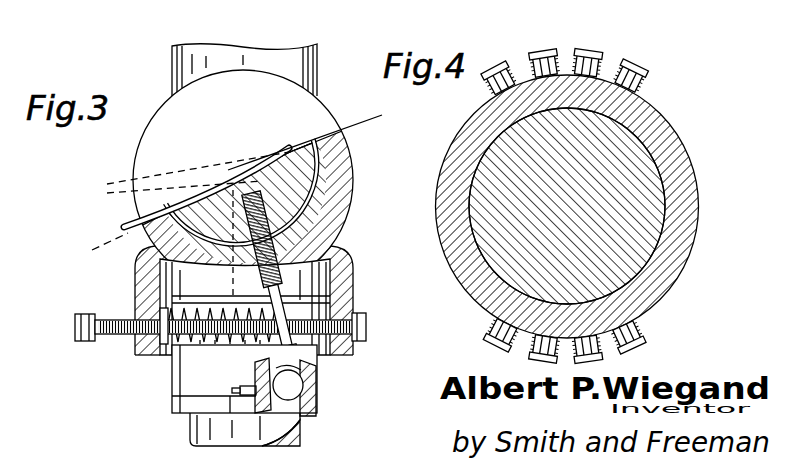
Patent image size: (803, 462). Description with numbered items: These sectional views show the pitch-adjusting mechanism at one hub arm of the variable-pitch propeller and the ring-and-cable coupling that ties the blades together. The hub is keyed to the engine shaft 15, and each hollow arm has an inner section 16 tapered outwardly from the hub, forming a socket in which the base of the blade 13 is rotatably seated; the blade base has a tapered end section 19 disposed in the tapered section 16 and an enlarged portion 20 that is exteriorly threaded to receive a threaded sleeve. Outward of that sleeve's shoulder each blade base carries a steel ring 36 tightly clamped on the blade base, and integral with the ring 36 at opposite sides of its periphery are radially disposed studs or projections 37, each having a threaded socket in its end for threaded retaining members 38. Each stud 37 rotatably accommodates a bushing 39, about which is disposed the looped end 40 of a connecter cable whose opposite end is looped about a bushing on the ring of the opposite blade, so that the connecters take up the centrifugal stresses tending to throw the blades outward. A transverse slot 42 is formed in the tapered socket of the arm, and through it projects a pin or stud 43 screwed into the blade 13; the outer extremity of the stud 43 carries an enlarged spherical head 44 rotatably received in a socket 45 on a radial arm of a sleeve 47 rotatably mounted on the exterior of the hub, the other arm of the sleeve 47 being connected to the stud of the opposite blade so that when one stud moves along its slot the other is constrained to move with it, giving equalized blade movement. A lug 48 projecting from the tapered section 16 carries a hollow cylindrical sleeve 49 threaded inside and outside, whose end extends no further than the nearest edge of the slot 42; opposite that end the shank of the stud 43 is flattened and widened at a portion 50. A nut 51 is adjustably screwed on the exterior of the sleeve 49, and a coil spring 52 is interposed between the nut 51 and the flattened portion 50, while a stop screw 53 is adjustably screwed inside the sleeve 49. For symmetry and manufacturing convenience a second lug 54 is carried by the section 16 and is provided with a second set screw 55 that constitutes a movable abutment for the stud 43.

In FIG. 3, the blade 13 is at (246, 160).
In FIG. 3, the engine shaft 15 is at (192, 430).
In FIG. 3, the inner section 16 is at (343, 181).
In FIG. 3, the tapered end section 19 is at (345, 162).
In FIG. 4, the enlarged portion 20 is at (650, 181).
In FIG. 4, the steel ring 36 is at (650, 118).
In FIG. 4, the studs or projections 37 is at (643, 80).
In FIG. 4, the threaded retaining members 38 is at (607, 58).
In FIG. 4, the bushing 39 is at (597, 67).
In FIG. 4, the looped end 40 is at (500, 82).
In FIG. 3, the transverse slot 42 is at (246, 308).
In FIG. 3, the pin or stud 43 is at (331, 229).
In FIG. 3, the spherical head 44 is at (318, 399).
In FIG. 3, the socket 45 is at (308, 412).
In FIG. 3, the sleeve 47 is at (172, 387).
In FIG. 3, the lug 48 is at (138, 283).
In FIG. 3, the hollow cylindrical sleeve 49 is at (178, 390).
In FIG. 3, the flattened portion 50 is at (300, 304).
In FIG. 3, the nut 51 is at (170, 344).
In FIG. 3, the coil spring 52 is at (207, 346).
In FIG. 3, the stop screw 53 is at (97, 342).
In FIG. 3, the second lug 54 is at (355, 306).
In FIG. 3, the second set screw 55 is at (368, 326).